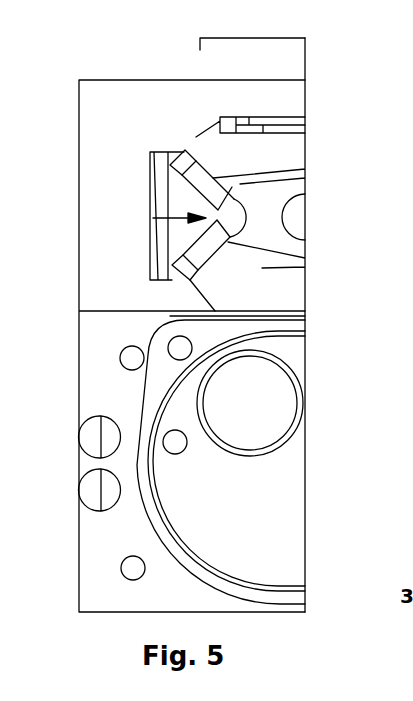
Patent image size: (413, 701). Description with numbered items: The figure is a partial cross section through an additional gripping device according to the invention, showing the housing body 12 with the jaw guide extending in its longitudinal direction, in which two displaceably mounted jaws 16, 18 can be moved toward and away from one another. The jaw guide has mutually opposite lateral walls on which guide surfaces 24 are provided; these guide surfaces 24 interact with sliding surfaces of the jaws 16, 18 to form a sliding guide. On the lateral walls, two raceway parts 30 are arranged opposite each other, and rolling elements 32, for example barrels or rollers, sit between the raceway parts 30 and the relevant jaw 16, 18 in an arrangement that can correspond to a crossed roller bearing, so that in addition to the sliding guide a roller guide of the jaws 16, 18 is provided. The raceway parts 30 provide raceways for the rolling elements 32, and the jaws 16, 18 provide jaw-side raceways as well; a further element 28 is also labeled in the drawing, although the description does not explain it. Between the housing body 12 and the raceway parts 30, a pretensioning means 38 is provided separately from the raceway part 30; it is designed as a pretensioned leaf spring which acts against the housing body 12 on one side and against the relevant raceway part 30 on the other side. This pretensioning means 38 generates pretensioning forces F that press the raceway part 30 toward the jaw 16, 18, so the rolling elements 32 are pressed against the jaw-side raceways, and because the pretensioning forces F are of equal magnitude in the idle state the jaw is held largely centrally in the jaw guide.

The housing body 12 is at (113, 100).
The jaw 16 is at (313, 325).
The jaw 18 is at (282, 172).
The guide surface 24 is at (200, 140).
The guide rail 28 is at (202, 132).
The raceway part 30 is at (183, 240).
The rolling element 32 is at (214, 190).
The pretensioning means 38 is at (150, 200).
The pretensioning force F is at (153, 219).